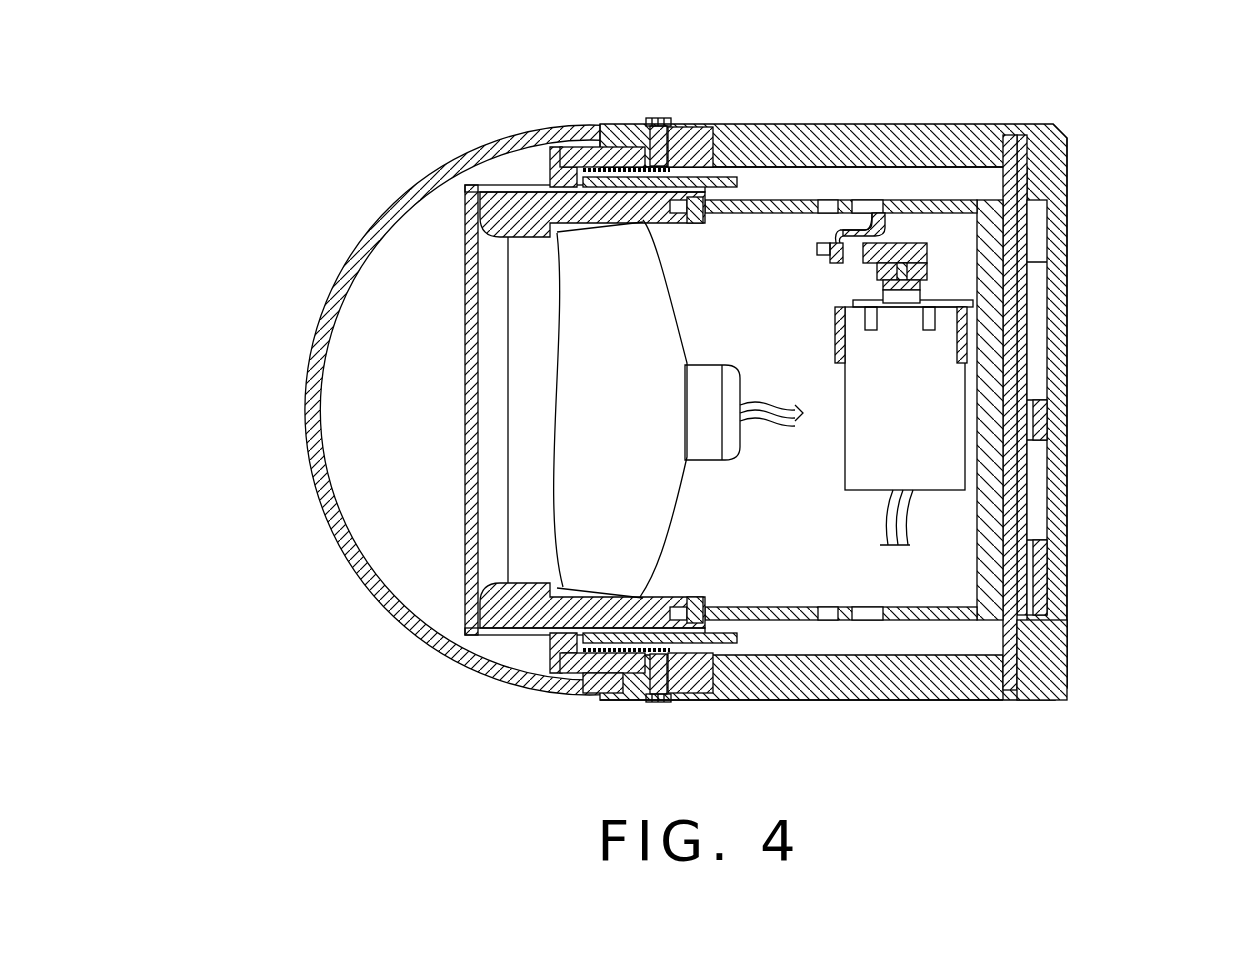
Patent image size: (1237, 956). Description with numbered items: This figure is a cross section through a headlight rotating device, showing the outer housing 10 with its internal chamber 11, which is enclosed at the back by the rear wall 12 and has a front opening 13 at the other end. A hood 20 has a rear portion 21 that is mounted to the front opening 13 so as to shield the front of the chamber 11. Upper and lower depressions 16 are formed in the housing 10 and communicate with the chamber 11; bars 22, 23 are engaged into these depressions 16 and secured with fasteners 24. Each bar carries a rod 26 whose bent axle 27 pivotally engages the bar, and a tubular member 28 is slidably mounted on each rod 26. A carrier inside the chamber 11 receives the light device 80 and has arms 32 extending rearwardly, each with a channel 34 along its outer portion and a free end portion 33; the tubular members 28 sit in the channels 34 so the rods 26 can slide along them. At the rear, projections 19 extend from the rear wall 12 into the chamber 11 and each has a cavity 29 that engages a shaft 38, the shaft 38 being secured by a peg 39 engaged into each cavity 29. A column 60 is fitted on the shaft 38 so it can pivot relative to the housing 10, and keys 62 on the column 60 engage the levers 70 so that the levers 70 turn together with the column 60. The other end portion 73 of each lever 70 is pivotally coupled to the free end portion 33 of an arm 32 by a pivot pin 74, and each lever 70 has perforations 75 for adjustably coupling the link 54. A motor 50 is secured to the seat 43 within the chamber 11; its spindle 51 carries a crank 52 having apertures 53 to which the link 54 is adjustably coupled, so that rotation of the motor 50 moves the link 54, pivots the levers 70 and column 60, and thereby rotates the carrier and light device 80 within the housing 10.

The housing 10 is at (893, 410).
The chamber 11 is at (958, 182).
The rear wall 12 is at (1067, 187).
The front opening 13 is at (570, 690).
The depression 16 is at (598, 140).
The projection 19 is at (1022, 637).
The hood 20 is at (315, 412).
The rear portion 21 is at (608, 700).
The bar 22 is at (680, 140).
The bar 23 is at (646, 703).
The fastener 24 is at (648, 117).
The rod 26 is at (707, 177).
The axle 27 is at (563, 145).
The tubular member 28 is at (680, 680).
The cavity 29 is at (1012, 703).
The arm 32 is at (537, 212).
The free end portion 33 is at (703, 625).
The channel 34 is at (508, 206).
The shaft 38 is at (1013, 518).
The peg 39 is at (1003, 698).
The seat 43 is at (967, 352).
The motor 50 is at (1012, 422).
The spindle 51 is at (927, 275).
The crank 52 is at (927, 252).
The aperture 53 is at (848, 266).
The link 54 is at (816, 199).
The column 60 is at (993, 555).
The key 62 is at (993, 178).
The lever 70 is at (834, 428).
The end portion 73 is at (742, 198).
The pivot pin 74 is at (834, 684).
The perforation 75 is at (878, 616).
The light device 80 is at (470, 342).